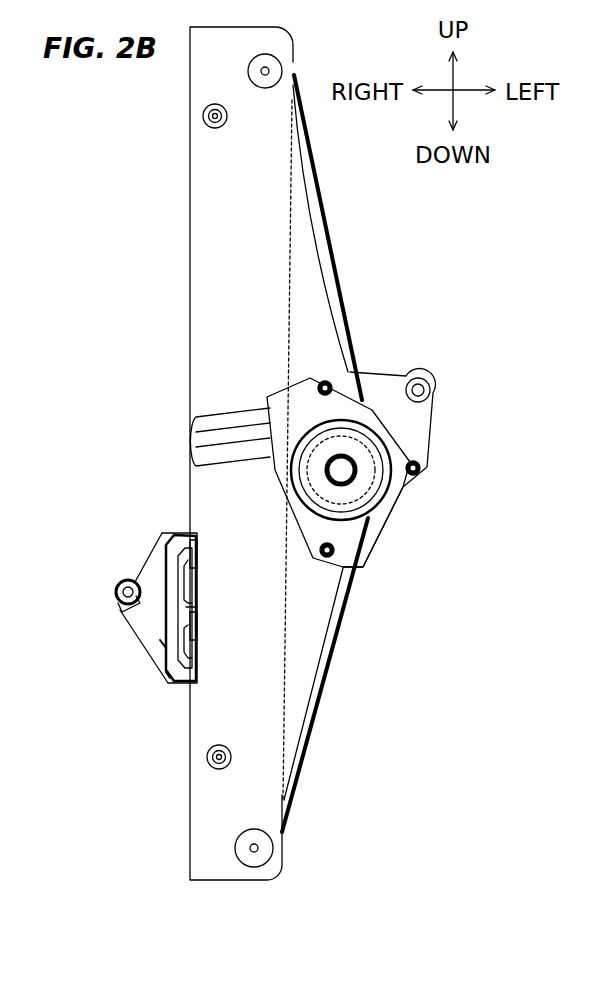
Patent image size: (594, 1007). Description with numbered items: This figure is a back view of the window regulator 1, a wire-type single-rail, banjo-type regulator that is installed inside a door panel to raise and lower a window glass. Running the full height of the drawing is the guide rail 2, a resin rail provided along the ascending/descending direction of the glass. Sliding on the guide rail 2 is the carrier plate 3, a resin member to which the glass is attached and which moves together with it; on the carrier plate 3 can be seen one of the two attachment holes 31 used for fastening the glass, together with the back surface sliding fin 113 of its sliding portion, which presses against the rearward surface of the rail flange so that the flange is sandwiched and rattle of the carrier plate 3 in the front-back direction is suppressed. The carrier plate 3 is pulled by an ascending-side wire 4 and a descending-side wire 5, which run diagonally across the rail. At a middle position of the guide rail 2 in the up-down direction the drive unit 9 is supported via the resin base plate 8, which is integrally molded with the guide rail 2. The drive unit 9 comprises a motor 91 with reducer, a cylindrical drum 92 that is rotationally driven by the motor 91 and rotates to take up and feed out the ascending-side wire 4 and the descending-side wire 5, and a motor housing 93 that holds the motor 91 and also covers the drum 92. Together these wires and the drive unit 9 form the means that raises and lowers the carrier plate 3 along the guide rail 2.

The window regulator 1 is at (396, 213).
The guide rail 2 is at (204, 234).
The carrier plate 3 is at (128, 602).
The attachment hole 31 is at (116, 597).
The back surface sliding fin 113 is at (163, 638).
The ascending-side wire 4 is at (340, 283).
The descending-side wire 5 is at (343, 605).
The base plate 8 is at (417, 430).
The drive unit 9 is at (319, 435).
The motor 91 is at (222, 428).
The drum 92 is at (382, 492).
The motor housing 93 is at (364, 498).